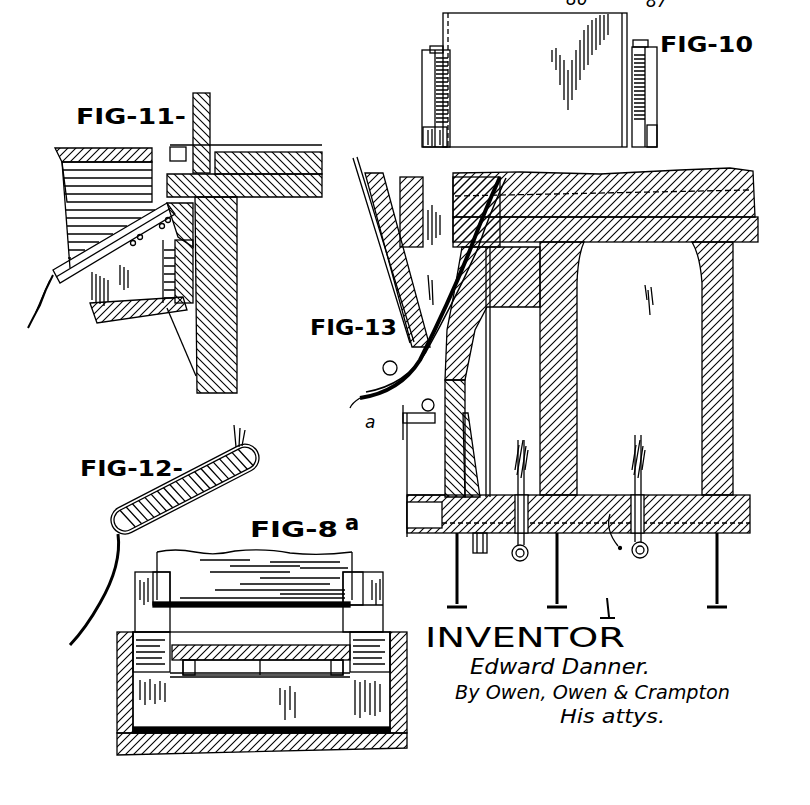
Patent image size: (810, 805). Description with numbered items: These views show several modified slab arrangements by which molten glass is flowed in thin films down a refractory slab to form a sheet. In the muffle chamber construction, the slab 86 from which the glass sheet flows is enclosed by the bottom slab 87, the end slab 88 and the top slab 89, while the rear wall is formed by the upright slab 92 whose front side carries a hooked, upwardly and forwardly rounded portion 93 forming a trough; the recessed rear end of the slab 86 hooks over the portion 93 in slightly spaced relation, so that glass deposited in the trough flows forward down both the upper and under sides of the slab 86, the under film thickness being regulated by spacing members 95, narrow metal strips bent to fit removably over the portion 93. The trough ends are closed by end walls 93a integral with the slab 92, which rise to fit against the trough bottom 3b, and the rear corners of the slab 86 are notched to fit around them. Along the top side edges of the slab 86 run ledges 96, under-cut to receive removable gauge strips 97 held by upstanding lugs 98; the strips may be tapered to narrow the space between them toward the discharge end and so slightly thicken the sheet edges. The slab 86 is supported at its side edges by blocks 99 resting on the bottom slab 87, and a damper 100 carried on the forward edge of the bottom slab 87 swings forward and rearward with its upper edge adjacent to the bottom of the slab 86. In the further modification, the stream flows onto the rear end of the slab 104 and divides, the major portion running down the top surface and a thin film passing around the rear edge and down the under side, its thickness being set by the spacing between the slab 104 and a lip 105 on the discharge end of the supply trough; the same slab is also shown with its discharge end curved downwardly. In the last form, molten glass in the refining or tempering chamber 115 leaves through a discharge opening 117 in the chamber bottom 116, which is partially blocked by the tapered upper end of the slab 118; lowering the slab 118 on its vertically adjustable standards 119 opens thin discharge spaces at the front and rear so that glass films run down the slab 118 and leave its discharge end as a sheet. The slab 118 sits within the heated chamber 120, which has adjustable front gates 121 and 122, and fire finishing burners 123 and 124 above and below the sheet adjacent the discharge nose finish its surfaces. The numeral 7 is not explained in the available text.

In FIG. 11, the molten glass body 7 is at (210, 120).
In FIG. 8A, the molten glass body 7 is at (232, 563).
In FIG. 10, the slab 86 is at (535, 80).
In FIG. 8A, the slab 86 is at (227, 663).
In FIG. 11, the bottom slab 87 is at (110, 320).
In FIG. 8A, the bottom slab 87 is at (395, 745).
In FIG. 11, the end slab 88 is at (63, 229).
In FIG. 8A, the end slab 88 is at (118, 692).
In FIG. 11, the top slab 89 is at (83, 158).
In FIG. 8A, the upright slab 92 is at (200, 713).
In FIG. 8A, the hooked portion 93 is at (318, 677).
In FIG. 8A, the end walls 93a is at (118, 654).
In FIG. 8A, the spacing members 95 is at (250, 676).
In FIG. 10, the ledges 96 is at (422, 94).
In FIG. 10, the gauge strips 97 is at (440, 134).
In FIG. 10, the lugs 98 is at (430, 49).
In FIG. 11, the supporting blocks 99 is at (140, 316).
In FIG. 11, the damper 100 is at (110, 230).
In FIG. 11, the slab 104 is at (76, 290).
In FIG. 11, the lip 105 is at (311, 173).
In FIG. 13, the refining or tempering chamber 115 is at (700, 172).
In FIG. 13, the chamber bottom 116 is at (672, 232).
In FIG. 13, the discharge opening 117 is at (501, 180).
In FIG. 13, the slab 118 is at (483, 282).
In FIG. 13, the standards 119 is at (490, 390).
In FIG. 13, the chamber 120 is at (428, 241).
In FIG. 13, the front gate 121 is at (395, 284).
In FIG. 13, the front gate 122 is at (450, 458).
In FIG. 13, the fire finishing burner 123 is at (383, 367).
In FIG. 13, the fire finishing burner 124 is at (421, 422).
In FIG. 8A, the trough bottom 3b is at (347, 618).